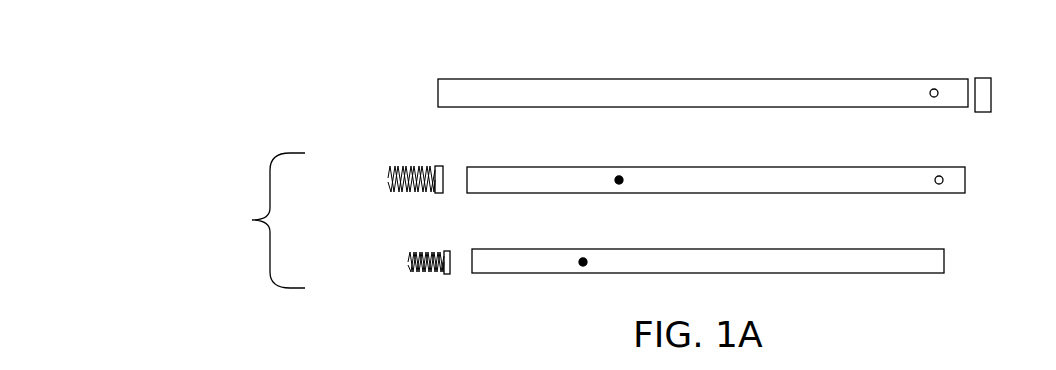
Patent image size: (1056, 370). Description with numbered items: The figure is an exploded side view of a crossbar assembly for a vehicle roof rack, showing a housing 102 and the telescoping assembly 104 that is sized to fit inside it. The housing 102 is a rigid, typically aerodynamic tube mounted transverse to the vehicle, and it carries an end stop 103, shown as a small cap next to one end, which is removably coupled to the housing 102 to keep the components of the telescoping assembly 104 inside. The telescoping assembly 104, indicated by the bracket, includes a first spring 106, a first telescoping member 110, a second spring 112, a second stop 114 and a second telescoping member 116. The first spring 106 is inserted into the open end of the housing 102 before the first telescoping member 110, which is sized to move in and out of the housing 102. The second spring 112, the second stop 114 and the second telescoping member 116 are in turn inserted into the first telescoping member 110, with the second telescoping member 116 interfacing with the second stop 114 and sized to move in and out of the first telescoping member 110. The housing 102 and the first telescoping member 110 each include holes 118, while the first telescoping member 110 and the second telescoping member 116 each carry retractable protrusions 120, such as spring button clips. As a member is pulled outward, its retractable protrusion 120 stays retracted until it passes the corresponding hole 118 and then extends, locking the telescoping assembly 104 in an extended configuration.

The housing 102 is at (466, 79).
The end stop 103 is at (981, 113).
The telescoping assembly 104 is at (245, 220).
The first spring 106 is at (438, 165).
The first telescoping member 110 is at (561, 167).
The second spring 112 is at (408, 262).
The second stop 114 is at (447, 274).
The second telescoping member 116 is at (542, 250).
The holes 118 is at (934, 88).
The retractable protrusions 120 is at (619, 180).